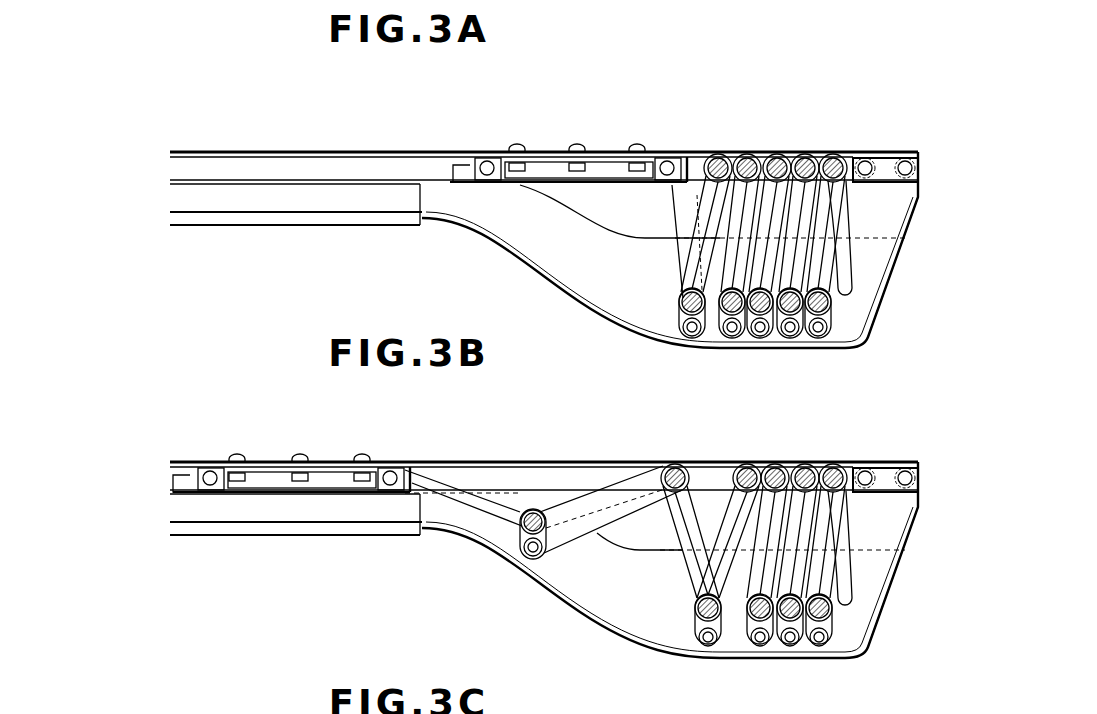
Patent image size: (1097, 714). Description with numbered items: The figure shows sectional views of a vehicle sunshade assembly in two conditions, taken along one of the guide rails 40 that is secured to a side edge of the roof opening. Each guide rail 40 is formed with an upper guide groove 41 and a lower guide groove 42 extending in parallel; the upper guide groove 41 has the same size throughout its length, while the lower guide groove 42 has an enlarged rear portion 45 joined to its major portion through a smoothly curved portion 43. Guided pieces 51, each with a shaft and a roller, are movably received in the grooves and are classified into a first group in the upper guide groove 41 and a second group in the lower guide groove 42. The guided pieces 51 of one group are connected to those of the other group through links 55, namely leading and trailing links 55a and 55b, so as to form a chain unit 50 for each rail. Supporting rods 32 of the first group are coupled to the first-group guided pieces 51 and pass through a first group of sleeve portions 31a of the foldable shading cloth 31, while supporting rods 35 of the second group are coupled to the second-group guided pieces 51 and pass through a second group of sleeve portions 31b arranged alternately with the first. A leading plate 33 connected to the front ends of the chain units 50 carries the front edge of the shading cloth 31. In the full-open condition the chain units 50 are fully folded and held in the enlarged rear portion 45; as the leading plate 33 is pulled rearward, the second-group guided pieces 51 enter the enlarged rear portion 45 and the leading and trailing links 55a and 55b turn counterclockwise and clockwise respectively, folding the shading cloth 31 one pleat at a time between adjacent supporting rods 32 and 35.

In FIG. 3A, the shading cloth 31 is at (683, 258).
In FIG. 3B, the shading cloth 31 is at (687, 573).
In FIG. 3B, the first group of sleeve portions 31a is at (690, 486).
In FIG. 3B, the second group of sleeve portions 31b is at (553, 520).
In FIG. 3A, the supporting rods of the first group 32 is at (885, 170).
In FIG. 3B, the supporting rods of the first group 32 is at (885, 480).
In FIG. 3A, the leading plate 33 is at (553, 178).
In FIG. 3B, the leading plate 33 is at (282, 487).
In FIG. 3A, the supporting rods of the second group 35 is at (760, 338).
In FIG. 3B, the supporting rods of the second group 35 is at (696, 606).
In FIG. 3A, the guide rail 40 is at (272, 146).
In FIG. 3B, the guide rail 40 is at (444, 456).
In FIG. 3A, the upper guide groove 41 is at (307, 165).
In FIG. 3B, the upper guide groove 41 is at (476, 474).
In FIG. 3A, the lower guide groove 42 is at (320, 200).
In FIG. 3B, the lower guide groove 42 is at (352, 516).
In FIG. 3A, the smoothly curved portion 43 is at (560, 275).
In FIG. 3B, the smoothly curved portion 43 is at (588, 605).
In FIG. 3A, the enlarged rear portion 45 is at (870, 282).
In FIG. 3B, the enlarged rear portion 45 is at (870, 590).
In FIG. 3A, the chain unit 50 is at (666, 294).
In FIG. 3A, the guided pieces 51 is at (489, 162).
In FIG. 3B, the guided pieces 51 is at (215, 471).
In FIG. 3A, the links 55 is at (836, 195).
In FIG. 3B, the links 55 is at (838, 526).
In FIG. 3B, the leading link 55a is at (600, 532).
In FIG. 3B, the trailing link 55b is at (455, 512).